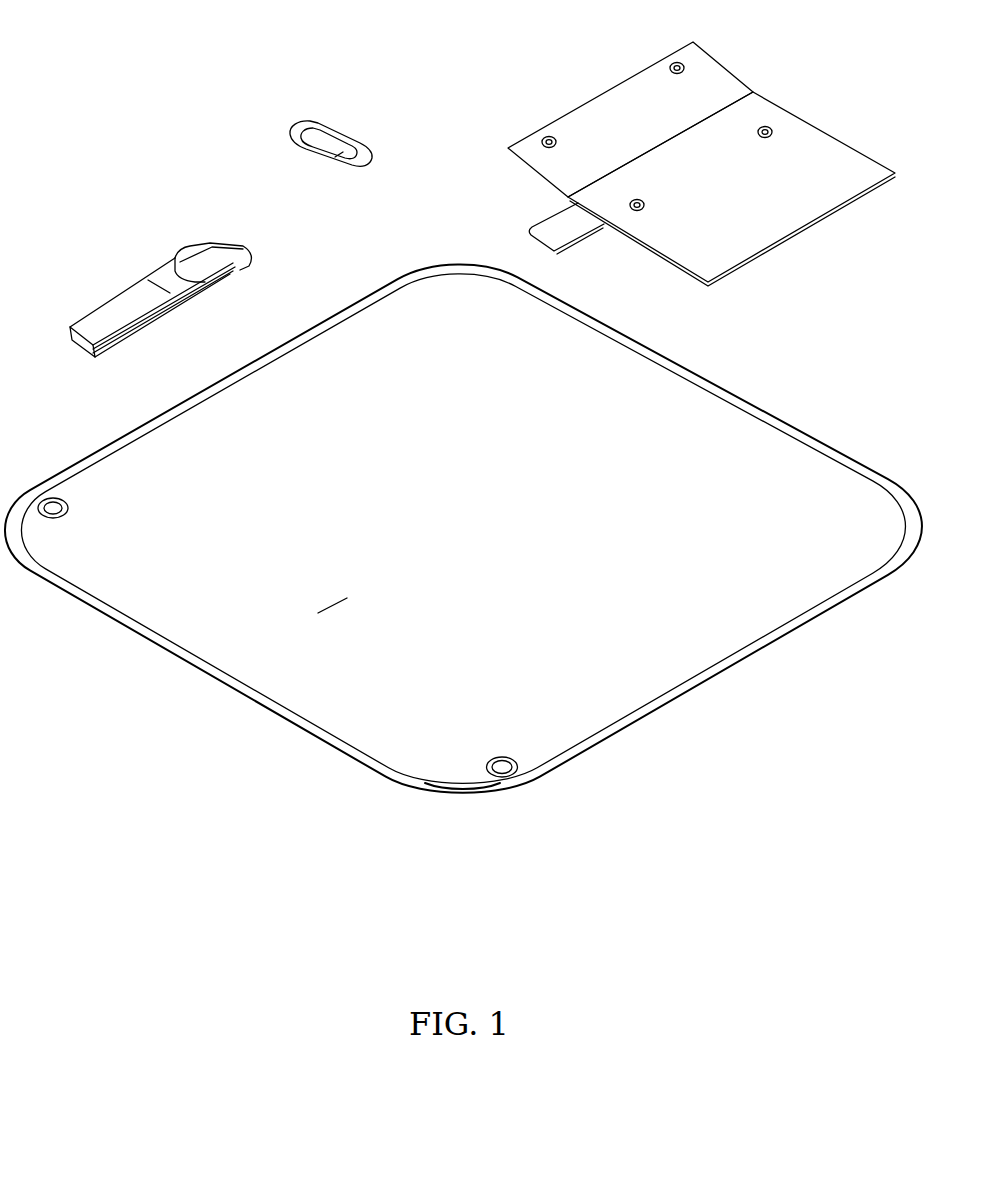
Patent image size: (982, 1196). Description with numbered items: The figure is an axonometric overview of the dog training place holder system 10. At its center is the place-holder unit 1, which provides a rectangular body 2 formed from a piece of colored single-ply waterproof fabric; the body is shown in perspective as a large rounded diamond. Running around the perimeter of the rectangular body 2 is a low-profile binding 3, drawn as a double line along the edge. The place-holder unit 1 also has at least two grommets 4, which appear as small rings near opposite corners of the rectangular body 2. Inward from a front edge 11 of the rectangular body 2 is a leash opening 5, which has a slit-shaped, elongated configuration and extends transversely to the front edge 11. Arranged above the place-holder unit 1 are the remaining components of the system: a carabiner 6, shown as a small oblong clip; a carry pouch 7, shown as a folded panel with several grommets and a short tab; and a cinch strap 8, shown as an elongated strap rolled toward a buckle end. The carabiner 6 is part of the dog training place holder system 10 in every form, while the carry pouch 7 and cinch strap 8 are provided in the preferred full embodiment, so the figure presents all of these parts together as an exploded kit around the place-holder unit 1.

The dog training place holder system 10 is at (162, 69).
The place-holder unit 1 is at (85, 676).
The rectangular body 2 is at (472, 521).
The low-profile binding 3 is at (699, 680).
The grommets 4 is at (67, 512).
The leash opening 5 is at (339, 601).
The carabiner 6 is at (338, 135).
The carry pouch 7 is at (725, 78).
The cinch strap 8 is at (134, 297).
The front edge 11 is at (410, 792).